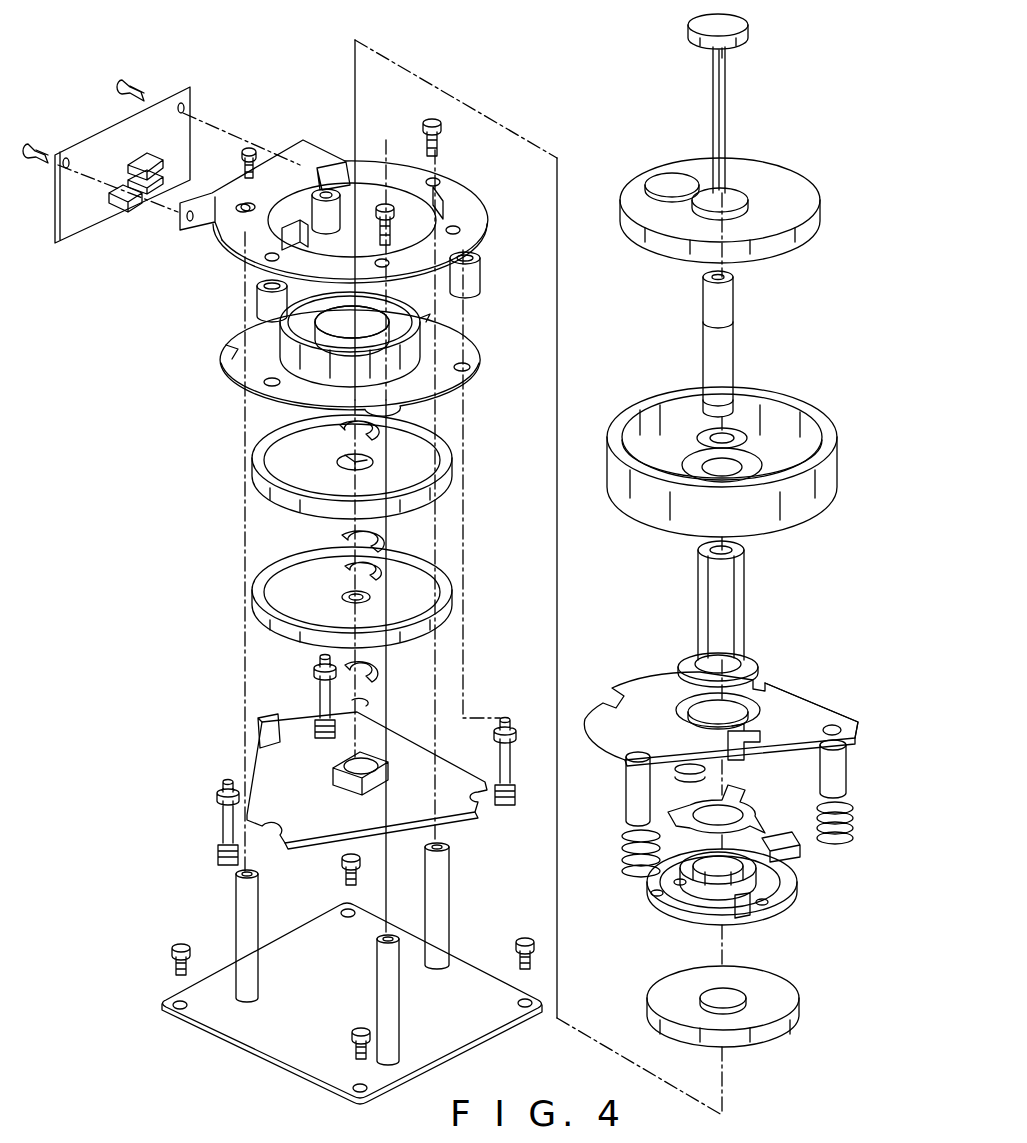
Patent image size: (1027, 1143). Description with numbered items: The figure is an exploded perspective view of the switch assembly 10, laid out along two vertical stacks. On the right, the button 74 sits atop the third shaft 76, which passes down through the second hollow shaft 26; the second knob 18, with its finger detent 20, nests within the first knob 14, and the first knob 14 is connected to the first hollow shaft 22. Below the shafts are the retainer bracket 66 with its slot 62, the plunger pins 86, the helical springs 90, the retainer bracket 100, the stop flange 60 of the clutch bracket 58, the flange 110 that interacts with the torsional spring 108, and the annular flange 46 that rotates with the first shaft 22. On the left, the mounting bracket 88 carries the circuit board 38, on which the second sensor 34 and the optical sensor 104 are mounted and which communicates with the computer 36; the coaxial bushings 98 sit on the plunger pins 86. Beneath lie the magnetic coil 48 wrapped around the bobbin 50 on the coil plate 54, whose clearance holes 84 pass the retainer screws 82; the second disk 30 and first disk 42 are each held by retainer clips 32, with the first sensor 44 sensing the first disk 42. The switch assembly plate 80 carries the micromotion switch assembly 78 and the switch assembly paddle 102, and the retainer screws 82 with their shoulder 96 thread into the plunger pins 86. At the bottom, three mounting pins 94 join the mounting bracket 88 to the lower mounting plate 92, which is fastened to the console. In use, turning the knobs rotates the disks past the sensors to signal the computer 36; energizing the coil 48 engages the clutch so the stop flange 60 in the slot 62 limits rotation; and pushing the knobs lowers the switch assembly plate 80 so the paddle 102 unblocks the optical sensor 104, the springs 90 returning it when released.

The switch assembly 10 is at (572, 100).
The first knob 14 is at (838, 460).
The second knob 18 is at (790, 170).
The finger detent 20 is at (665, 185).
The first hollow shaft 22 is at (746, 575).
The second hollow shaft 26 is at (735, 325).
The second disk 30 is at (455, 450).
The retainer clips 32 is at (380, 584).
The second sensor 34 is at (150, 155).
The computer 36 is at (92, 128).
The circuit board 38 is at (195, 97).
The first disk 42 is at (455, 585).
The first sensor 44 is at (175, 175).
The annular flange 46 is at (776, 1035).
The magnetic coil 48 is at (430, 316).
The bobbin 50 is at (423, 327).
The coil plate 54 is at (482, 345).
The clutch bracket 58 is at (790, 884).
The stop flange 60 is at (800, 852).
The slot 62 is at (780, 690).
The retainer bracket 66 is at (830, 712).
The button 74 is at (740, 27).
The third shaft 76 is at (727, 80).
The micromotion switch assembly 78 is at (345, 790).
The switch assembly plate 80 is at (445, 770).
The retainer screws 82 is at (512, 772).
The clearance holes 84 is at (478, 362).
The plunger pins 86 is at (846, 777).
The mounting bracket 88 is at (485, 210).
The helical springs 90 is at (854, 826).
The lower mounting plate 92 is at (258, 1040).
The mounting pins 94 is at (243, 915).
The shoulder 96 is at (505, 720).
The coaxial bushings 98 is at (480, 265).
The retainer bracket 100 is at (742, 787).
The switch assembly paddle 102 is at (262, 736).
The optical sensor 104 is at (122, 213).
The torsional spring 108 is at (757, 663).
The flange 110 is at (748, 912).